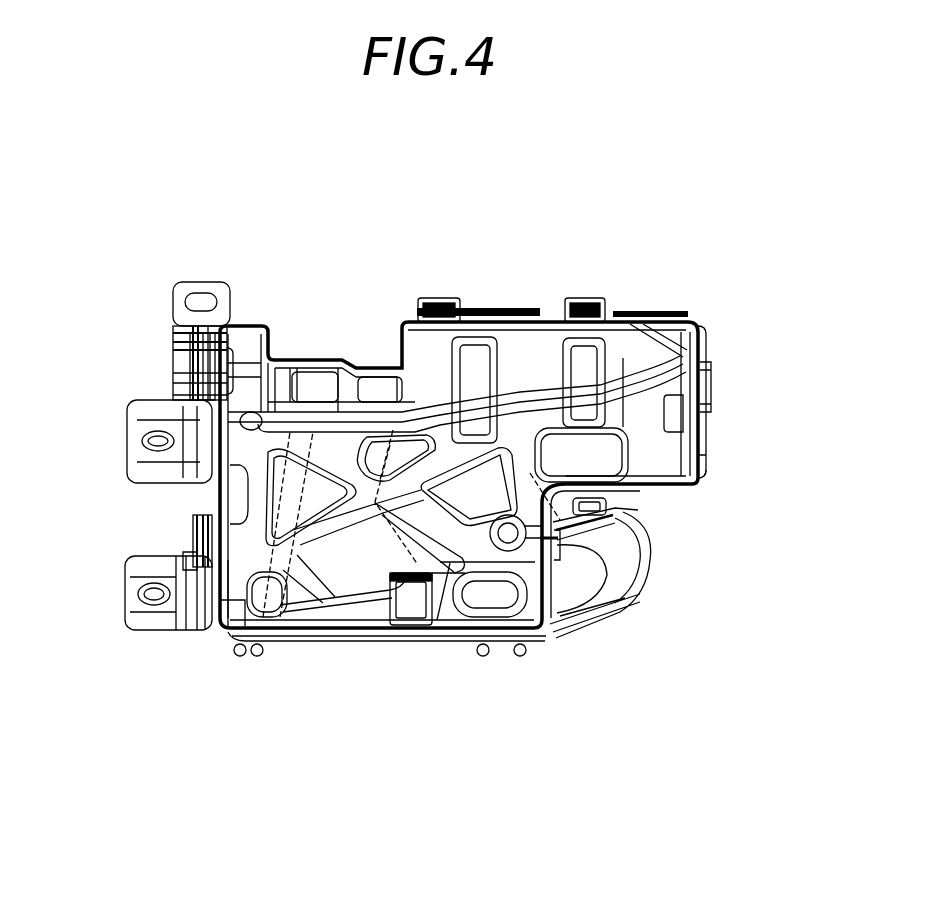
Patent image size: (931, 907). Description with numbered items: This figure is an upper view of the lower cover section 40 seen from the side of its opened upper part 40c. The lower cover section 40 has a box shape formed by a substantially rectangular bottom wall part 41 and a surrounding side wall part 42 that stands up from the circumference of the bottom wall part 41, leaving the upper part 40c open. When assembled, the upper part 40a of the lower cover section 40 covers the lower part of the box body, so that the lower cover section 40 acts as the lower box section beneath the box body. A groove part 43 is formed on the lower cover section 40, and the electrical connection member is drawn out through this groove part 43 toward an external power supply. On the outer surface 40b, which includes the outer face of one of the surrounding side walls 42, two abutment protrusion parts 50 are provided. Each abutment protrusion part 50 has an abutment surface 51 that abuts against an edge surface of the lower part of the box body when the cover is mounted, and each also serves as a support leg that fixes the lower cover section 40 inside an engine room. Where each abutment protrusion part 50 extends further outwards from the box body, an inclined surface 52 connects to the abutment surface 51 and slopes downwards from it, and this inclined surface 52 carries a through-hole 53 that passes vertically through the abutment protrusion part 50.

The lower cover section 40 is at (373, 263).
The upper part 40a is at (540, 638).
The outer surface 40b is at (500, 312).
The opened upper part 40c is at (630, 320).
The bottom wall part 41 is at (228, 568).
The surrounding side wall part 42 is at (705, 462).
The groove part 43 is at (285, 322).
The abutment protrusion part 50 is at (88, 305).
The abutment surface 51 is at (178, 334).
The inclined surface 52 is at (172, 406).
The through-hole 53 is at (182, 364).